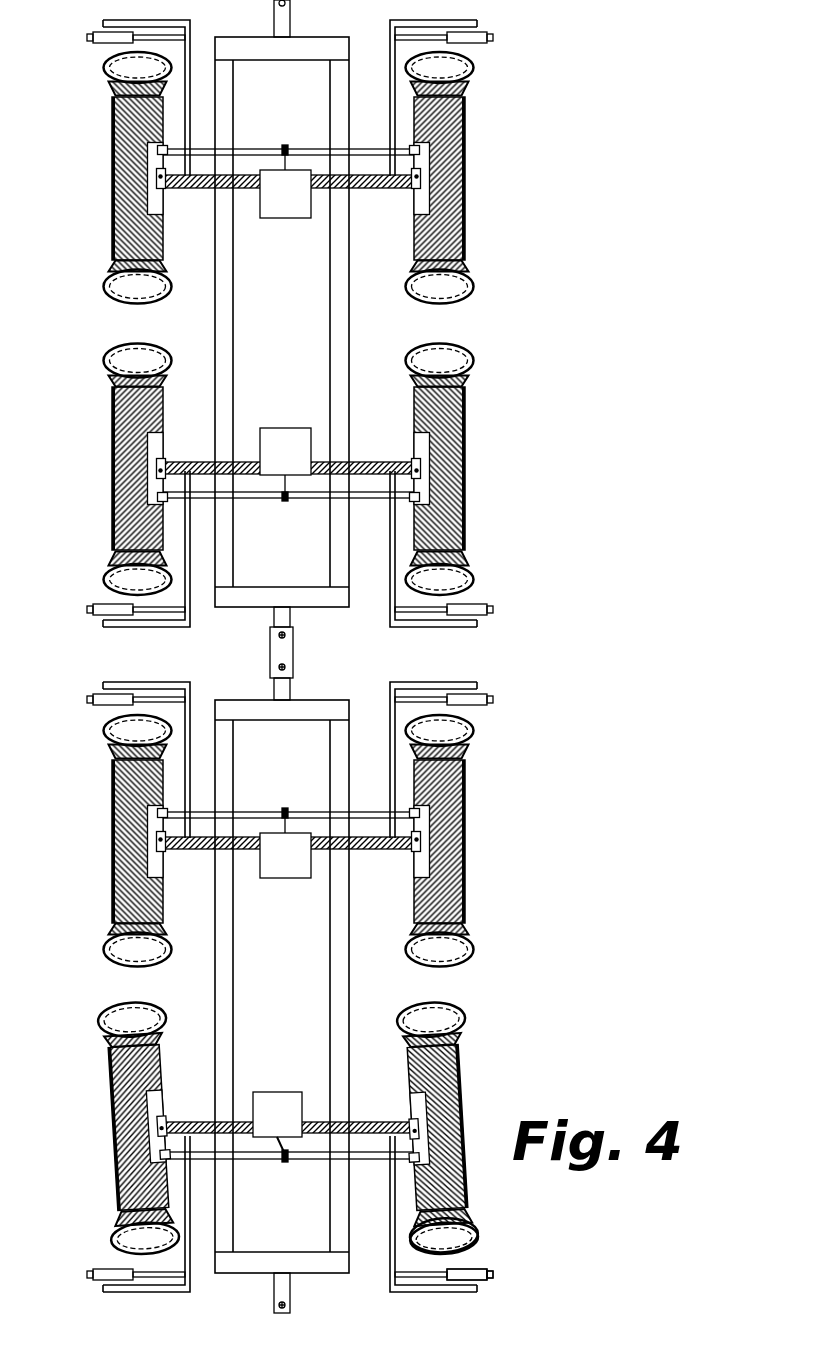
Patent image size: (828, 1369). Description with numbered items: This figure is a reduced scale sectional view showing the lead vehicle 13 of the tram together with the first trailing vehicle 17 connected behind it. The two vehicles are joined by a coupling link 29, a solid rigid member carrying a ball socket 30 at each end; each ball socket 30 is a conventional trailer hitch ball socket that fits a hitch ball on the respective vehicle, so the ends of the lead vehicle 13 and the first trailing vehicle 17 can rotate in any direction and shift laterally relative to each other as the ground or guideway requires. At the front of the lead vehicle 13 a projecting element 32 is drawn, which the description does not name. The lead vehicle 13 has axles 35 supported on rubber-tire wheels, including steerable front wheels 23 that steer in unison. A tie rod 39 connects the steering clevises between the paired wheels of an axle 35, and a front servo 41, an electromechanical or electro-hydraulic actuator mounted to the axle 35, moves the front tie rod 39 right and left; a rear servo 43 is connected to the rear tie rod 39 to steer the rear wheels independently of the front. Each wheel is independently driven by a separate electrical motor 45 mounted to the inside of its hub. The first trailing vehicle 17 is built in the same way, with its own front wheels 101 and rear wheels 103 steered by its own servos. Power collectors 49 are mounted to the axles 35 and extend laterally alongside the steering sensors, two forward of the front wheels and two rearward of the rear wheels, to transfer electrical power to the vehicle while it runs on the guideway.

The drive shaft 32 is at (294, 4).
The rear wheels 103 is at (478, 71).
The first trailing vehicle 17 is at (473, 322).
The front wheels 101 is at (477, 573).
The ball socket 30 is at (278, 636).
The coupling link 29 is at (295, 661).
The rear servo 43 is at (293, 878).
The lead vehicle 13 is at (480, 989).
The front servo 41 is at (259, 1092).
The axle 35 is at (206, 1120).
The tie rod 39 is at (283, 1162).
The electrical motor 45 is at (465, 1092).
The front wheels 23 is at (481, 1231).
The power collector 49 is at (490, 1278).